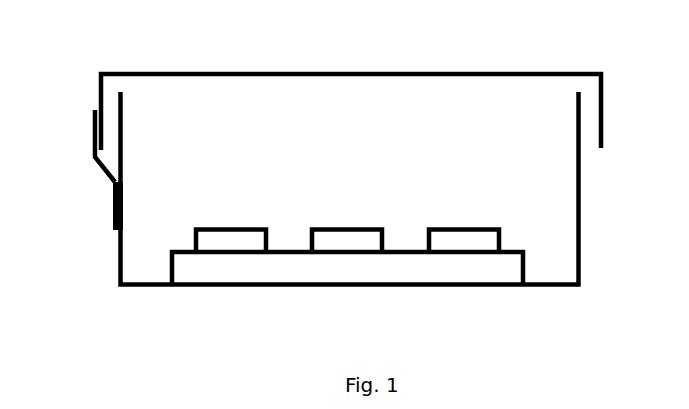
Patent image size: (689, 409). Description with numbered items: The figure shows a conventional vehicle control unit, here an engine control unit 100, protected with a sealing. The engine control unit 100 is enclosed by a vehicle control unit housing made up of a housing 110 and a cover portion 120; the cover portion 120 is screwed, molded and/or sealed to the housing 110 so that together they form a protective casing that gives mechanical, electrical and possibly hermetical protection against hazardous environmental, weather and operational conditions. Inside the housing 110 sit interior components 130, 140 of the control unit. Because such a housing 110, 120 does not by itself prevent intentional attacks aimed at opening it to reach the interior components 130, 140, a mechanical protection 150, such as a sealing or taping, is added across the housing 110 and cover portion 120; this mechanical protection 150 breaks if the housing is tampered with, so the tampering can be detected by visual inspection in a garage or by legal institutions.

The engine control unit 100 is at (530, 37).
The housing 110 is at (580, 287).
The cover portion 120 is at (190, 72).
The interior component 130 is at (172, 251).
The interior component 140 is at (455, 227).
The mechanical protection 150 is at (100, 167).